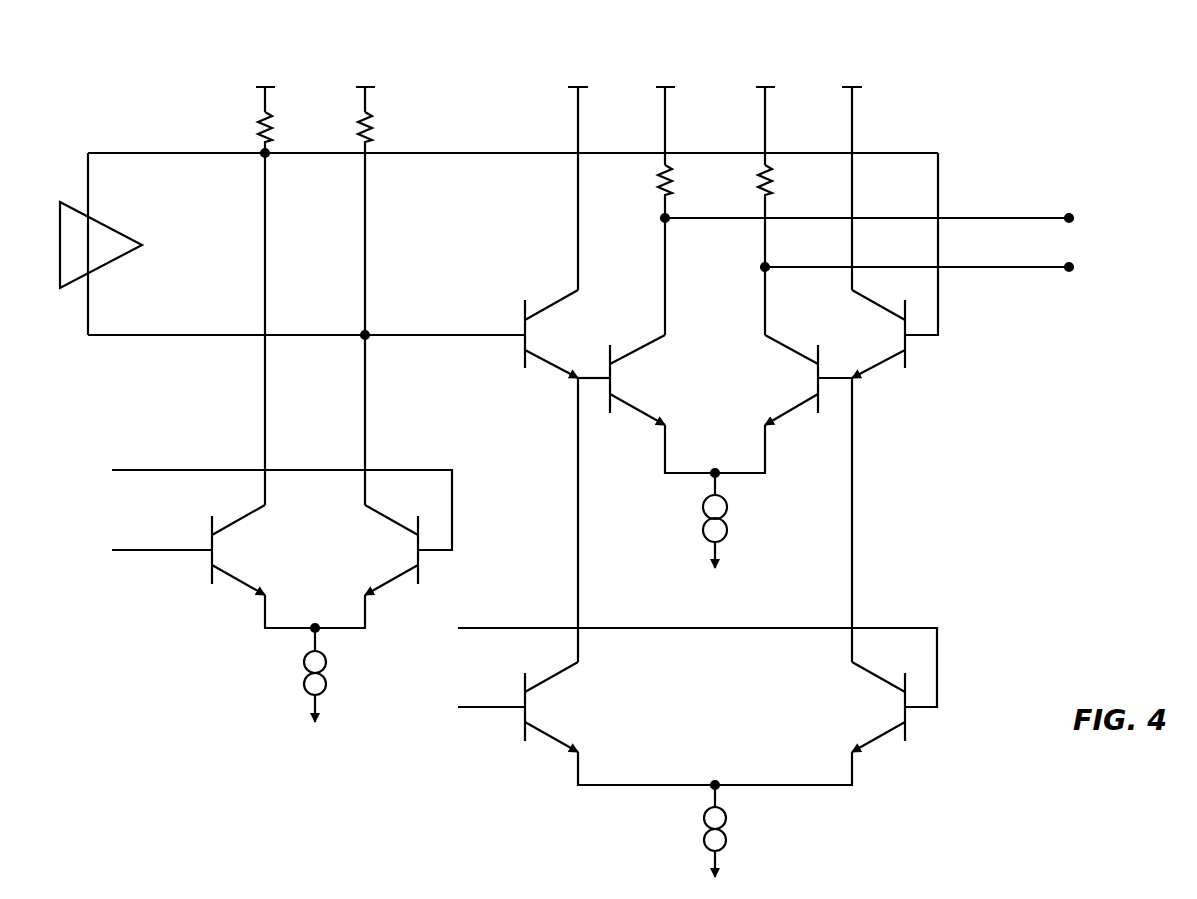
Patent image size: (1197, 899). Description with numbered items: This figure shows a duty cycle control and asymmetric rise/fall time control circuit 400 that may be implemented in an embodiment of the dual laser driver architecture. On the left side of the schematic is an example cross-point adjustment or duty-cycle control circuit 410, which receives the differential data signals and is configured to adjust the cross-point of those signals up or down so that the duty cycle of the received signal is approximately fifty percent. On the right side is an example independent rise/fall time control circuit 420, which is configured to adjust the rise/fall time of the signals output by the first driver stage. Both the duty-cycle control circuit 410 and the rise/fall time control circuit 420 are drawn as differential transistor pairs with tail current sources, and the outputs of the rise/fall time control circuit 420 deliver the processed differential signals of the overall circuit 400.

The driver circuit 400 is at (469, 438).
The cross-point adjustment circuit 410 is at (291, 84).
The rise/fall time control circuit 420 is at (804, 84).